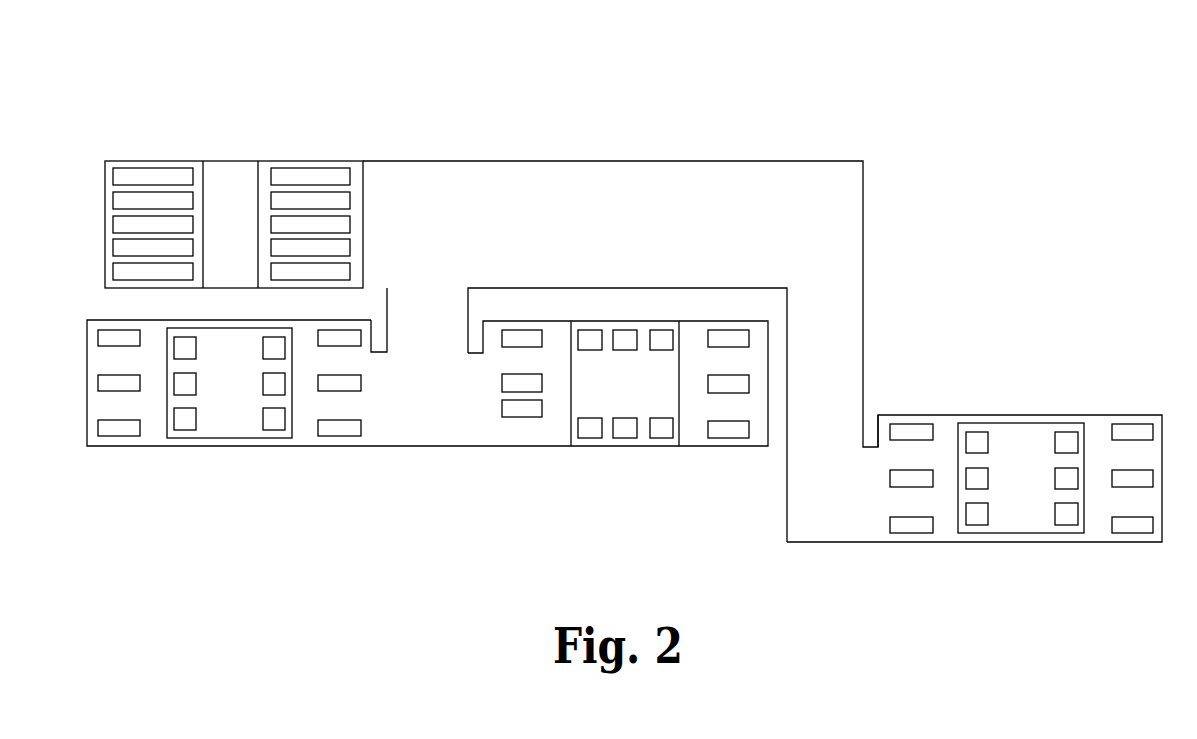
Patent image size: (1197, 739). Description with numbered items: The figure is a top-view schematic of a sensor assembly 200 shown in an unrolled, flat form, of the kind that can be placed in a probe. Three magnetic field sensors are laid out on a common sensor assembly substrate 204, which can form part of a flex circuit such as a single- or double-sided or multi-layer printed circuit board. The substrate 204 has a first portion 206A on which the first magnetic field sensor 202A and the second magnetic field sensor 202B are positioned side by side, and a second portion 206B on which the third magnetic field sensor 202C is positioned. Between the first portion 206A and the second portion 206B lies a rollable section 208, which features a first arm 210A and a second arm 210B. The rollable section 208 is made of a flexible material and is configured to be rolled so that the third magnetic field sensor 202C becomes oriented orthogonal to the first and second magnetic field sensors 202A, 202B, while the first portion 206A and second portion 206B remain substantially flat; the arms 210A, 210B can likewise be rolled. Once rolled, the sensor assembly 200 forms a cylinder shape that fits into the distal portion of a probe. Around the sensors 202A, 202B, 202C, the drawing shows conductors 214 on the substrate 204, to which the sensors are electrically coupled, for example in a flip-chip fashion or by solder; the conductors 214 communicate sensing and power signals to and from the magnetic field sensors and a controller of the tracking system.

The sensor assembly 200 is at (166, 74).
The first magnetic field sensor 202A is at (228, 432).
The second magnetic field sensor 202B is at (607, 433).
The third magnetic field sensor 202C is at (1022, 527).
The sensor assembly substrate 204 is at (228, 175).
The first portion 206A is at (427, 432).
The second portion 206B is at (950, 430).
The rollable section 208 is at (848, 205).
The first arm 210A is at (453, 303).
The second arm 210B is at (848, 348).
The conductors 214 is at (118, 432).